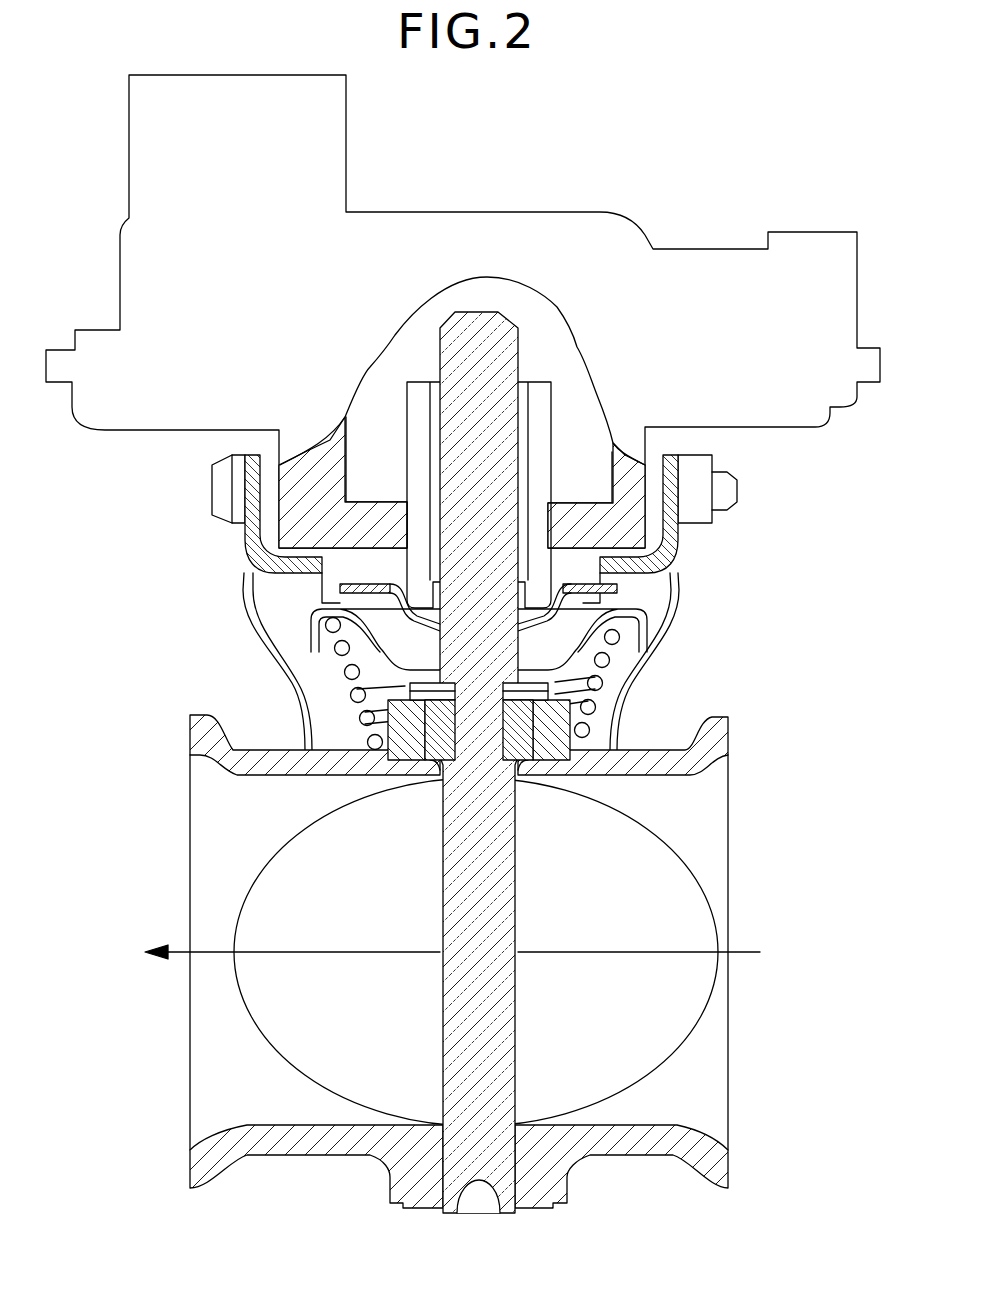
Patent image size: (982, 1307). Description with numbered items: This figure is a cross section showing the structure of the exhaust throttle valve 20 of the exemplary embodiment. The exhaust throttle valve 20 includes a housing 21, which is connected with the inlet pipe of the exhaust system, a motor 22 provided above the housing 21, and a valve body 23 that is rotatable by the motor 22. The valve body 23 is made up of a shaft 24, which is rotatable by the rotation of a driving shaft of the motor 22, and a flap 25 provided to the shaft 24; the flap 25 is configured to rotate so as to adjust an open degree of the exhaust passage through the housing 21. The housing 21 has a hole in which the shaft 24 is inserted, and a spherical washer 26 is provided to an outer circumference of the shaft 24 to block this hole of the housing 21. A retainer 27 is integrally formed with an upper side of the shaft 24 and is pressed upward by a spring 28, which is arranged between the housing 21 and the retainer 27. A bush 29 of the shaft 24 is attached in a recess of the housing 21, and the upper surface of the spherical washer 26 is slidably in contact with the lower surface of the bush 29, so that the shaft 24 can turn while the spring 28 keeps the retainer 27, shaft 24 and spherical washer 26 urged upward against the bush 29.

The exhaust throttle valve 20 is at (541, 142).
The housing 21 is at (643, 757).
The motor 22 is at (667, 283).
The valve body 23 is at (703, 922).
The shaft 24 is at (507, 888).
The flap 25 is at (703, 987).
The spherical washer 26 is at (520, 782).
The retainer 27 is at (368, 655).
The spring 28 is at (623, 638).
The bush 29 is at (513, 710).